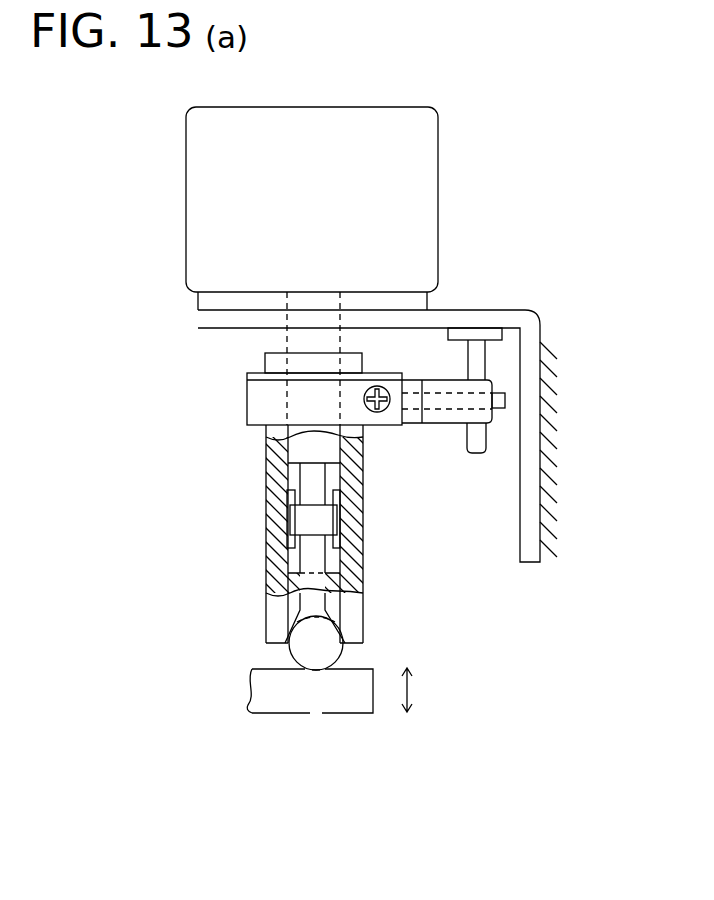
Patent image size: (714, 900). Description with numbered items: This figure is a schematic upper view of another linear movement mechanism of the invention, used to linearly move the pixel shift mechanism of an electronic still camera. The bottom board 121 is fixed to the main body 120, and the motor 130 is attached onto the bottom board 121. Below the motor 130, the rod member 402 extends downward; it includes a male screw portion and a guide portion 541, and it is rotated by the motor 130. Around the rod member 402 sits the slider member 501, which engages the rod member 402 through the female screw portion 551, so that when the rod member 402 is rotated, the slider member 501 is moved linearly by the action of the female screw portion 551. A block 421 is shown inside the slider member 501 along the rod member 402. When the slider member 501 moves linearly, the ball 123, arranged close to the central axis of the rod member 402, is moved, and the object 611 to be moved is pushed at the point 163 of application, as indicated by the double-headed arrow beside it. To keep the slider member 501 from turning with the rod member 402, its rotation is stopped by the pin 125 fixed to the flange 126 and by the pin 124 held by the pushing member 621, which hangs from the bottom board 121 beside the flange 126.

The motor 130 is at (428, 160).
The bottom board 121 is at (490, 317).
The main body 120 is at (548, 500).
The flange 126 is at (257, 400).
The pin 125 is at (505, 401).
The pushing member 621 is at (415, 425).
The pin 124 is at (477, 455).
The slider member 501 is at (363, 558).
The rod member 402 is at (312, 557).
The piston block 421 is at (302, 520).
The female screw portion 551 is at (295, 500).
The guide portion 541 is at (313, 583).
The ball 123 is at (305, 657).
The object to be moved 611 is at (262, 688).
The point of application 163 is at (316, 670).